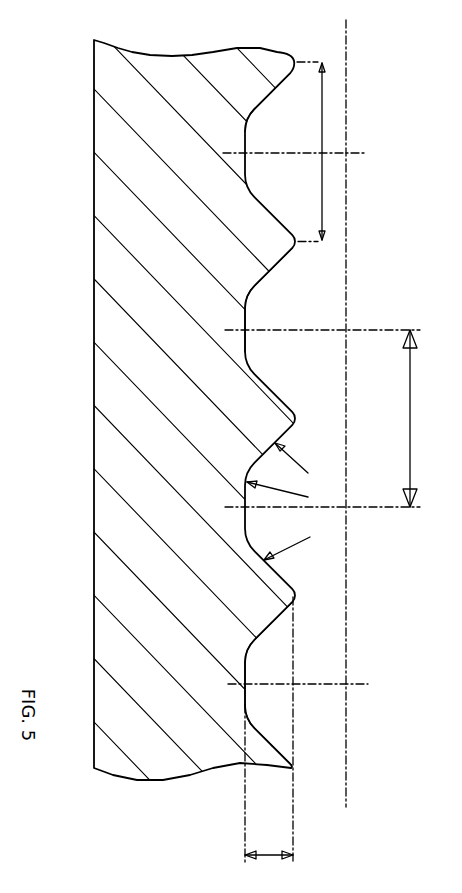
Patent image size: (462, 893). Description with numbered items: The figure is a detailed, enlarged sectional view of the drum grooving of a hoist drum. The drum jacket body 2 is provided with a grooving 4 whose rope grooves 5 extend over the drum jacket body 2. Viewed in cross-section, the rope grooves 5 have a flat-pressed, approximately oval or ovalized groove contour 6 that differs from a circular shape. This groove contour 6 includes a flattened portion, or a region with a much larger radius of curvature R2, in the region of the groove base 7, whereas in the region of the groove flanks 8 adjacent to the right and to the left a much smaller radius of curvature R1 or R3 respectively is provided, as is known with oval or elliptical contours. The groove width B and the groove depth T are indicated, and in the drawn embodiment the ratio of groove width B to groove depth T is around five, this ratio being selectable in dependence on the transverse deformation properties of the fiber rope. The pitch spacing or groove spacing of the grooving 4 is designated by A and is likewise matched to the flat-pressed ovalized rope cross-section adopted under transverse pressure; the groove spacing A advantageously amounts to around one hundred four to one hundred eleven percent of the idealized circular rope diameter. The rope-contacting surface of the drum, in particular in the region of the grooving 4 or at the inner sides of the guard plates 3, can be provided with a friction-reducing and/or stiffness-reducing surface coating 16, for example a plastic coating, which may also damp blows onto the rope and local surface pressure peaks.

The drum jacket body 2 is at (97, 393).
The surface coating 16 is at (258, 100).
The grooving 4 is at (297, 268).
The rope grooves 5 is at (247, 322).
The guard plates 3 is at (285, 618).
The groove base 7 is at (247, 676).
The groove contour 6 is at (262, 715).
The groove flanks 8 is at (283, 743).
The groove spacing A is at (419, 418).
The groove width B is at (328, 151).
The groove depth T is at (269, 864).
The radius of curvature R1 is at (294, 455).
The radius of curvature R2 is at (277, 498).
The radius of curvature R3 is at (294, 554).